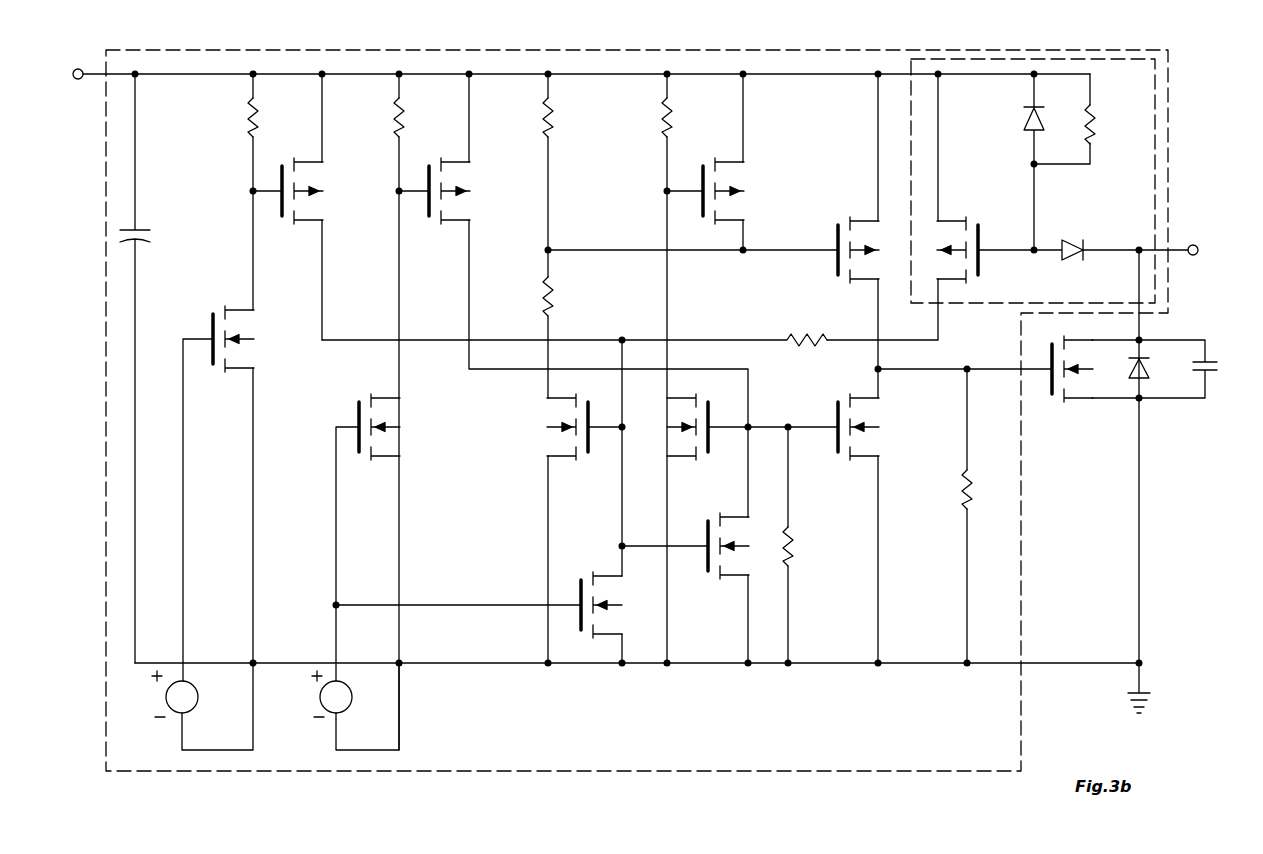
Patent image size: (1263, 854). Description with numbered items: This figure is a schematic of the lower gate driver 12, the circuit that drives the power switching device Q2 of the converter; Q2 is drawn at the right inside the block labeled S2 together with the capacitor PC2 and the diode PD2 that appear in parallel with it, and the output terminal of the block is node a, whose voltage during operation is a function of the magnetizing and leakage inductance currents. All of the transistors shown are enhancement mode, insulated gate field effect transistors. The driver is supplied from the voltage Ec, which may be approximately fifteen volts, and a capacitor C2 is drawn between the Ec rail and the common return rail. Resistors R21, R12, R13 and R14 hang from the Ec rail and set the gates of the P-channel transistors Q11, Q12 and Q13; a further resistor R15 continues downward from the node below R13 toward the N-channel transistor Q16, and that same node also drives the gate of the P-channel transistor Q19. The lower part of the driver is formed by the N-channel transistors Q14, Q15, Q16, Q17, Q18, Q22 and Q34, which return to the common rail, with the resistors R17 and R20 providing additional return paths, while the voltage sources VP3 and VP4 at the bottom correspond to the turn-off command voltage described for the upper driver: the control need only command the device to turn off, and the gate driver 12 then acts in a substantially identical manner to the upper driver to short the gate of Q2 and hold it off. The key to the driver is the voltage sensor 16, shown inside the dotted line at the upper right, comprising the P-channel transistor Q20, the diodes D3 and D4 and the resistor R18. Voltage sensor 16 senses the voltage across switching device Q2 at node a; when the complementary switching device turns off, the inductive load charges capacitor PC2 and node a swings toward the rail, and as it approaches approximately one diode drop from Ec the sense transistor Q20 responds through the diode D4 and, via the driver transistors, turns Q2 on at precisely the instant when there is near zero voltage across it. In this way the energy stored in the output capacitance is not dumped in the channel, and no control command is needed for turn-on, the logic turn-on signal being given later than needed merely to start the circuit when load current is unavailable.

The lower gate driver 12 is at (558, 50).
The voltage sensor 16 is at (1155, 228).
The voltage Ec is at (88, 76).
The capacitor C2 is at (147, 368).
The resistor R21 is at (270, 192).
The resistor R12 is at (416, 412).
The resistor R13 is at (565, 162).
The resistor R14 is at (684, 368).
The resistor R15 is at (565, 324).
The resistor R17 is at (807, 545).
The resistor R18 is at (1081, 119).
The resistor R20 is at (984, 516).
The P-channel transistor Q11 is at (306, 207).
The P-channel transistor Q12 is at (573, 295).
The P-channel transistor Q13 is at (724, 162).
The N-channel transistor Q14 is at (239, 493).
The N-channel transistor Q15 is at (386, 537).
The N-channel transistor Q16 is at (559, 528).
The N-channel transistor Q17 is at (734, 427).
The N-channel transistor Q18 is at (945, 516).
The P-channel transistor Q19 is at (834, 236).
The P-channel transistor Q20 is at (930, 207).
The N-channel transistor Q22 is at (685, 588).
The N-channel transistor Q34 is at (498, 605).
The switching device Q2 is at (1091, 391).
The diode D3 is at (1018, 162).
The diode D4 is at (1111, 238).
The node a is at (1201, 252).
The switch section S2 is at (1164, 481).
The parasitic diode PD2 is at (1157, 369).
The capacitor PC2 is at (1196, 369).
The voltage source VP3 is at (202, 706).
The voltage source VP4 is at (355, 706).